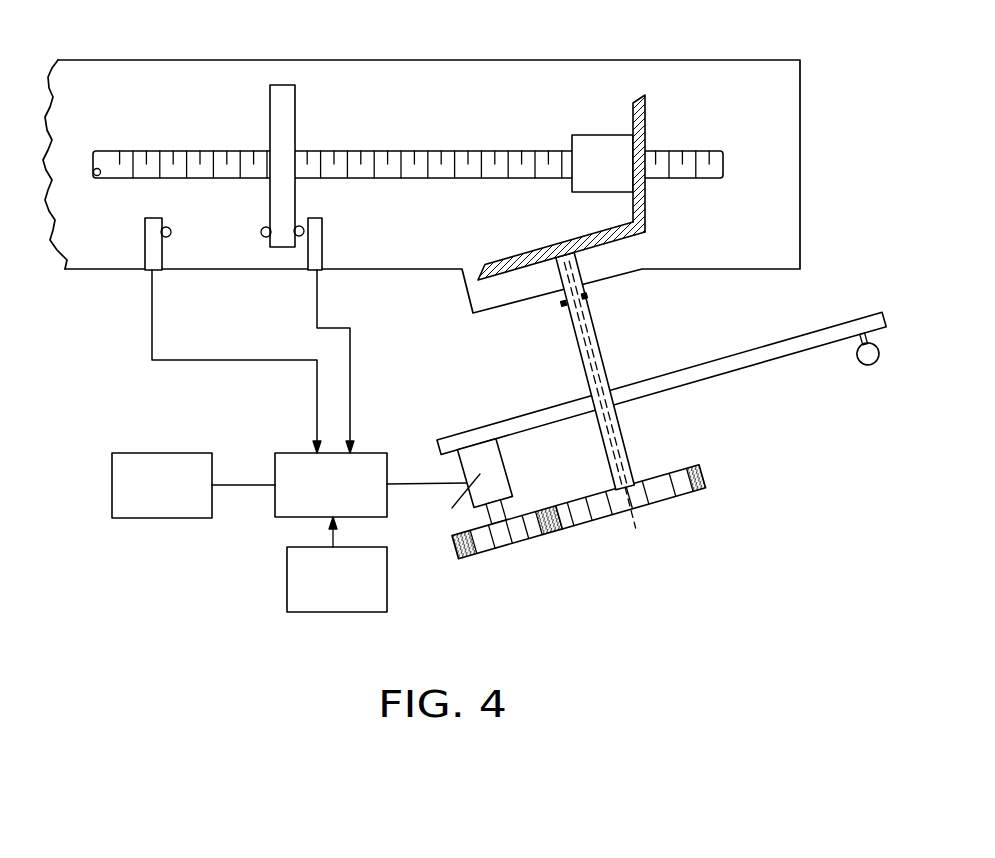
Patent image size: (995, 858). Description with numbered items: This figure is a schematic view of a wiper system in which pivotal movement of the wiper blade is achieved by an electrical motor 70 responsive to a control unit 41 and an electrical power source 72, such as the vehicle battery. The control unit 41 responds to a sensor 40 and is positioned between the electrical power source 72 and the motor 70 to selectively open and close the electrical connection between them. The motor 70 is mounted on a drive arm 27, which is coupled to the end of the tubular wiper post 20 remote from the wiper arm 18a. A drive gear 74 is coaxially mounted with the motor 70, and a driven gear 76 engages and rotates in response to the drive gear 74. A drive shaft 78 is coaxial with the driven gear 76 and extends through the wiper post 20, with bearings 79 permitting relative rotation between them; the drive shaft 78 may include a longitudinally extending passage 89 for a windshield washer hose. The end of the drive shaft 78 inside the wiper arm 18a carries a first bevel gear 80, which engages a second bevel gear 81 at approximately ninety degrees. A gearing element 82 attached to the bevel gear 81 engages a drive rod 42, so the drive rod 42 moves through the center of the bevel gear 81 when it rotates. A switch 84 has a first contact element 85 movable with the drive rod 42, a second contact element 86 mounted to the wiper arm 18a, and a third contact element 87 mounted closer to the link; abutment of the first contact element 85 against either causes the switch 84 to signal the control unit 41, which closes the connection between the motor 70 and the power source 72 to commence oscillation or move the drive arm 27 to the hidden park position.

The wiper arm 18a is at (425, 60).
The drive rod 42 is at (185, 152).
The first contact element 85 is at (283, 248).
The switch 84 is at (222, 332).
The third contact element 87 is at (168, 238).
The second contact element 86 is at (323, 230).
The gearing element 82 is at (588, 137).
The second bevel gear 81 is at (644, 118).
The first bevel gear 80 is at (497, 262).
The wiper post 20 is at (601, 343).
The bearings 79 is at (562, 307).
The drive shaft 78 is at (618, 433).
The drive arm 27 is at (792, 352).
The electrical motor 70 is at (513, 484).
The drive gear 74 is at (505, 543).
The driven gear 76 is at (680, 489).
The longitudinally extending passage 89 is at (631, 524).
The electrical power source 72 is at (113, 453).
The control unit 41 is at (275, 516).
The sensor 40 is at (351, 613).